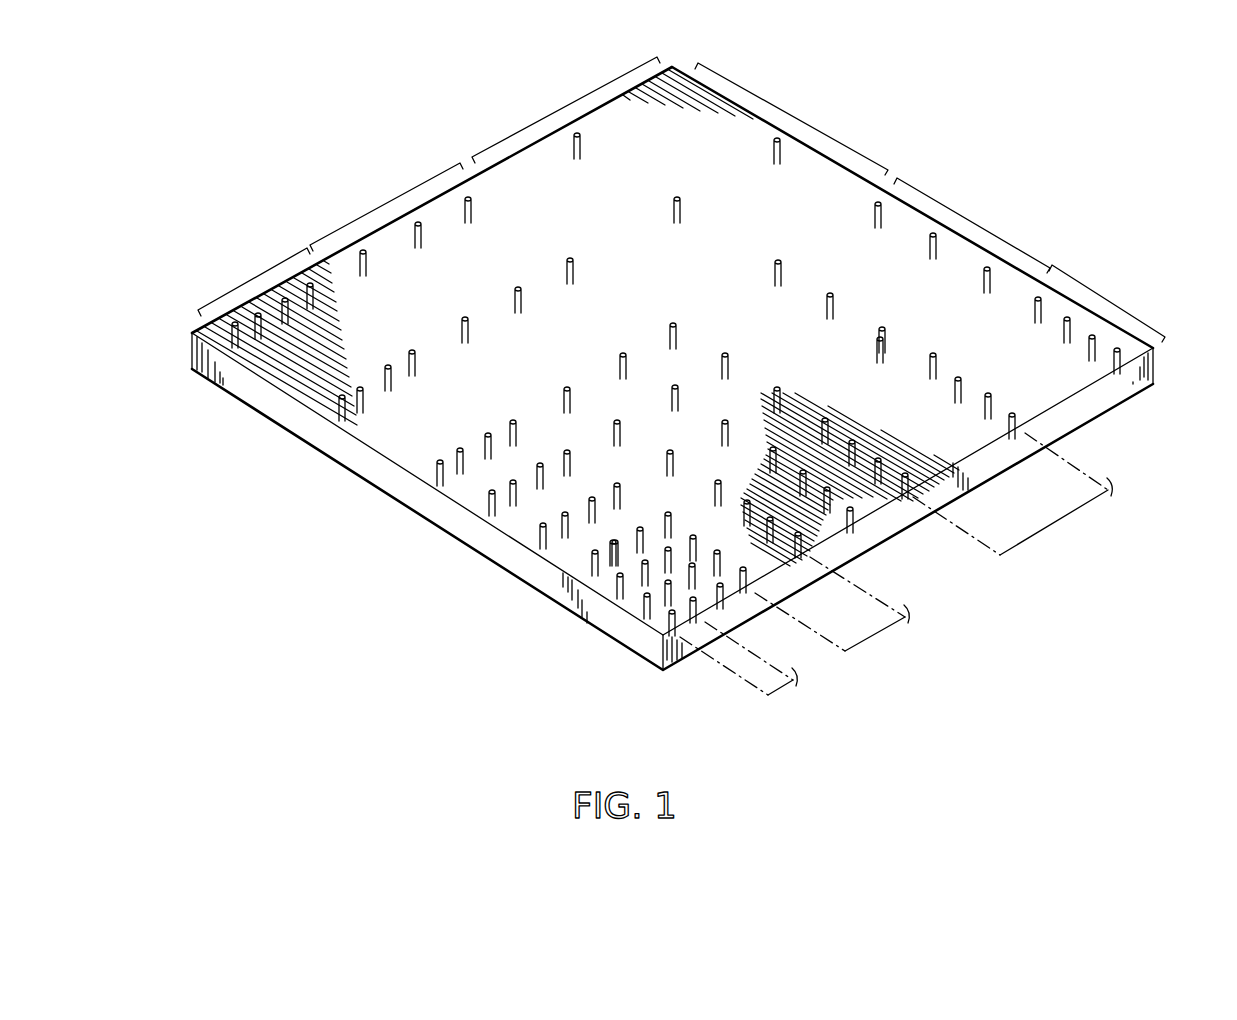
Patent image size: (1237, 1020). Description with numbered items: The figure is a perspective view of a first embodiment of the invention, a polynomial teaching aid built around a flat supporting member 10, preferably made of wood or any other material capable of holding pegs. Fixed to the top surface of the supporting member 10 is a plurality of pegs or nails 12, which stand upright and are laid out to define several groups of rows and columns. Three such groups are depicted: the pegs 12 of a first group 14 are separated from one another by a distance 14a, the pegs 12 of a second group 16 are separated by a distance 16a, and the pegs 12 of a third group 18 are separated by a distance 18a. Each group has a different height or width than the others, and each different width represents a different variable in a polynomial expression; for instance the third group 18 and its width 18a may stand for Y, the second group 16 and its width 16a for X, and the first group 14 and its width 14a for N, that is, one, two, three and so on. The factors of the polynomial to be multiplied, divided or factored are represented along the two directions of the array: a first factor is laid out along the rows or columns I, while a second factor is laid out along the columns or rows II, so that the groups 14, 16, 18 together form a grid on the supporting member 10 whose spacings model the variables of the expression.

The supporting member 10 is at (190, 356).
The pegs 12 is at (985, 289).
The first group 14 is at (252, 279).
The second group 16 is at (382, 206).
The third group 18 is at (563, 106).
The distance 14a is at (772, 698).
The distance 16a is at (875, 635).
The distance 18a is at (1060, 527).
The rows (columns) I is at (335, 530).
The columns (rows) II is at (1092, 645).